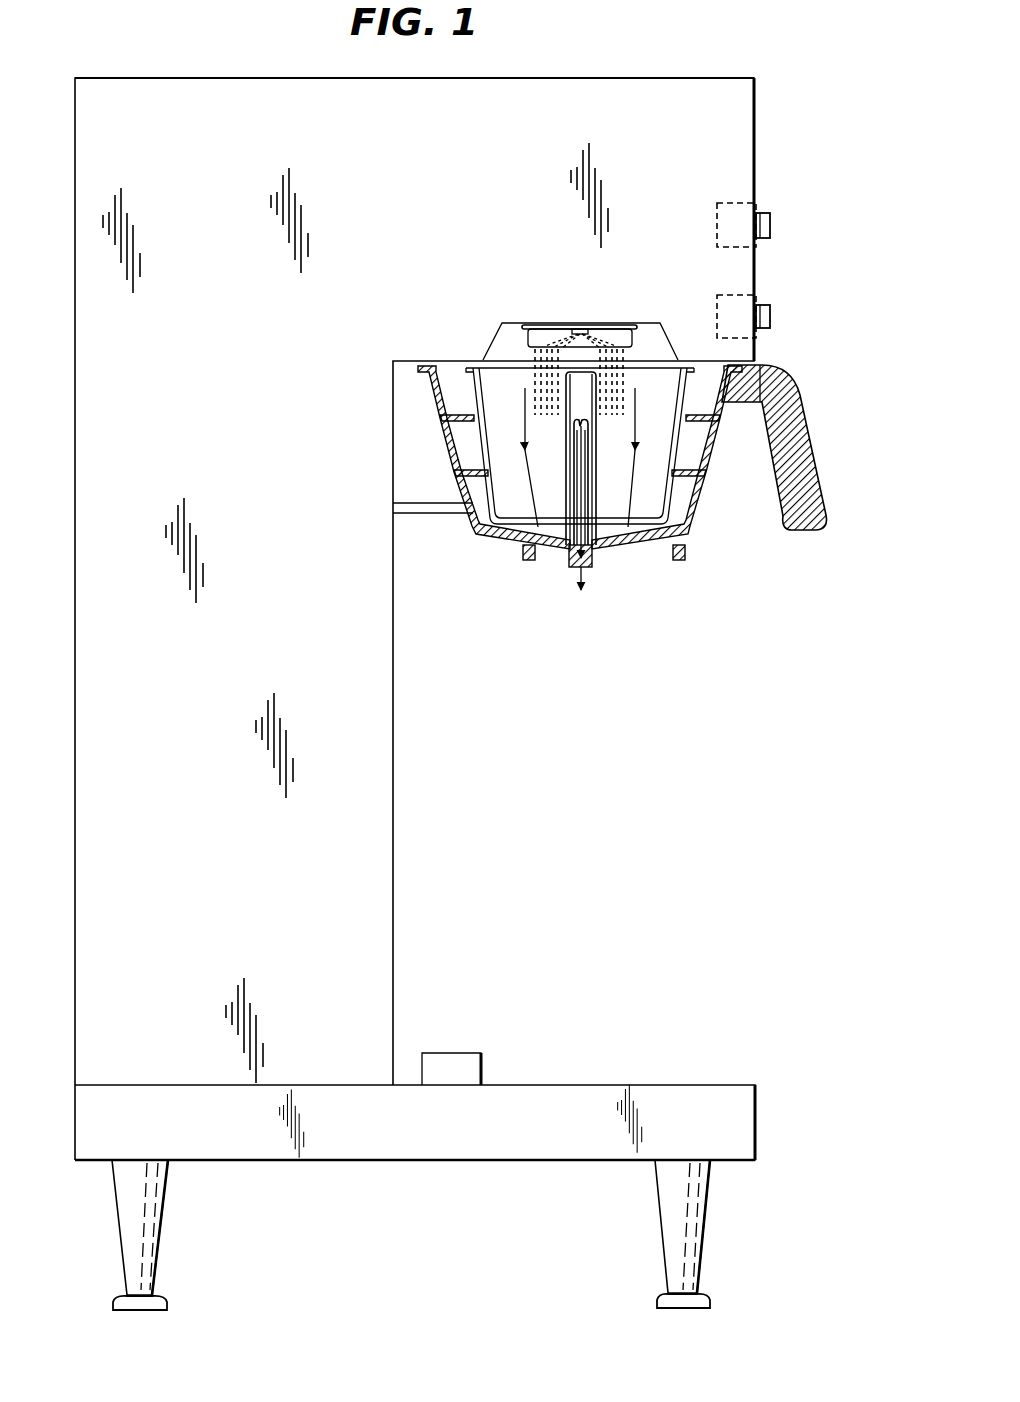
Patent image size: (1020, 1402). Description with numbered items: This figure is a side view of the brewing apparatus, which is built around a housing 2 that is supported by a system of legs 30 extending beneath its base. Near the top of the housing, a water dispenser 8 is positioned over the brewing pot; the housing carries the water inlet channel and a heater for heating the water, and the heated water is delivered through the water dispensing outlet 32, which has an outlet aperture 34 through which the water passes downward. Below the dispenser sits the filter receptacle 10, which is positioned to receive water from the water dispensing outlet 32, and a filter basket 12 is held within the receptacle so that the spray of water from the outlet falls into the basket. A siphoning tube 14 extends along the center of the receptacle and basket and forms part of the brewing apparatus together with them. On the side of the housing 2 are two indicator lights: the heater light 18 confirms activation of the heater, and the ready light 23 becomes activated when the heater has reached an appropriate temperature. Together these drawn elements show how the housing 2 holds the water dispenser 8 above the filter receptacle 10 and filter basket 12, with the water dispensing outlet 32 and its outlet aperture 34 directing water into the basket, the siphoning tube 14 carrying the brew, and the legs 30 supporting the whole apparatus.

The housing 2 is at (768, 152).
The water dispenser 8 is at (622, 336).
The filter receptacle 10 is at (708, 453).
The filter basket 12 is at (692, 455).
The siphoning tube 14 is at (596, 553).
The heater light 18 is at (770, 316).
The ready light 23 is at (770, 226).
The legs 30 is at (705, 1232).
The water dispensing outlet 32 is at (535, 326).
The outlet aperture 34 is at (582, 330).